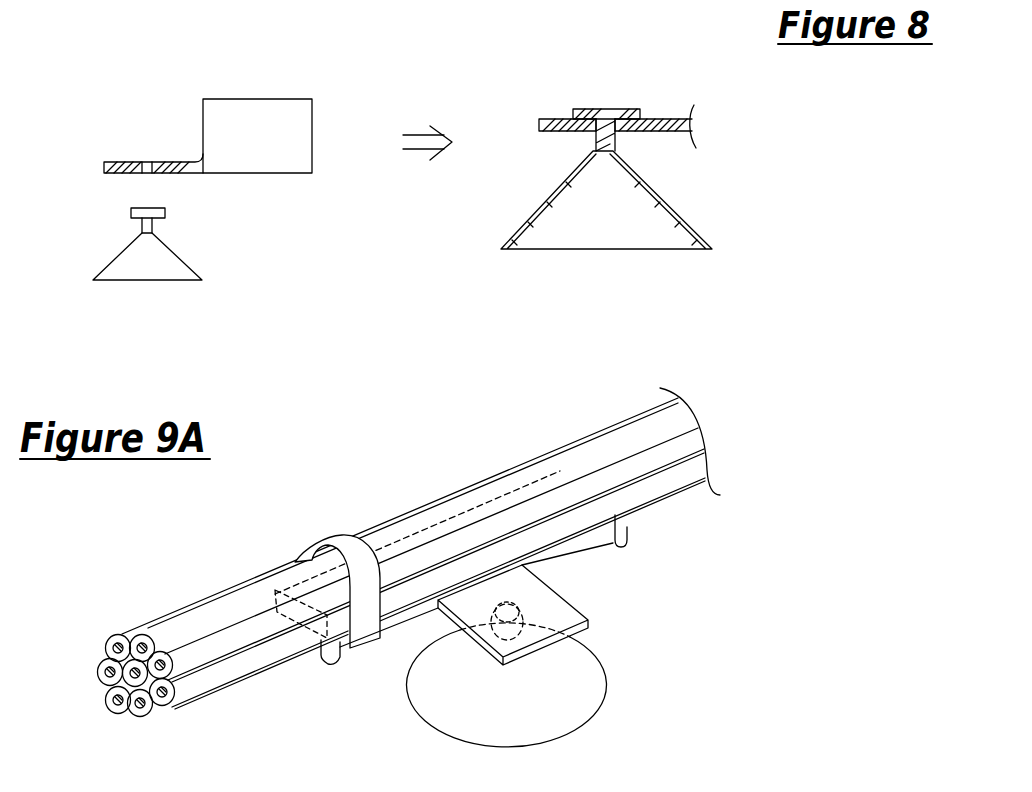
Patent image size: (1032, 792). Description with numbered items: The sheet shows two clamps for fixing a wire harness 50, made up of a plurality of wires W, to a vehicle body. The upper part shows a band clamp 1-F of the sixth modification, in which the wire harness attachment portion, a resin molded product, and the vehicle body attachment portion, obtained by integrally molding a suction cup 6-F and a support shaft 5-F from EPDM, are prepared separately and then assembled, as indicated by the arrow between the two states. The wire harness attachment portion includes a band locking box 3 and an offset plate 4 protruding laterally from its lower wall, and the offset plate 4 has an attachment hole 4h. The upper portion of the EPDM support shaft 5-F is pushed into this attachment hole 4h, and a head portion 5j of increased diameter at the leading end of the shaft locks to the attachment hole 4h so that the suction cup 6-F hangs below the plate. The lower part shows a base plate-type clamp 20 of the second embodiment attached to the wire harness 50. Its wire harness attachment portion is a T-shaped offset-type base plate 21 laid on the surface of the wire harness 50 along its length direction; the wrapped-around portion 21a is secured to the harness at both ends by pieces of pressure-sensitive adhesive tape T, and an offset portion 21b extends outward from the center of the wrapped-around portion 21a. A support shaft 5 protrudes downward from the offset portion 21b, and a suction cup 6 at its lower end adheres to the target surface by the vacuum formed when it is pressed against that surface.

In FIG. 8, the band clamp 1-F is at (150, 56).
In FIG. 8, the band locking box 3 is at (267, 98).
In FIG. 8, the offset plate 4 is at (113, 162).
In FIG. 8, the attachment hole 4h is at (145, 173).
In FIG. 8, the head portion 5j is at (157, 207).
In FIG. 8, the support shaft 5-F is at (152, 225).
In FIG. 8, the suction cup 6-F is at (112, 260).
In FIG. 9A, the wire harness 50 is at (207, 612).
In FIG. 9A, the wires W is at (130, 637).
In FIG. 9A, the pressure-sensitive adhesive tape T is at (333, 550).
In FIG. 9A, the base plate 21 is at (550, 604).
In FIG. 9A, the wrapped-around portion 21a is at (563, 554).
In FIG. 9A, the offset portion 21b is at (557, 587).
In FIG. 9A, the base plate-type clamp 20 is at (608, 638).
In FIG. 9A, the support shaft 5 is at (513, 637).
In FIG. 9A, the suction cup 6 is at (443, 703).